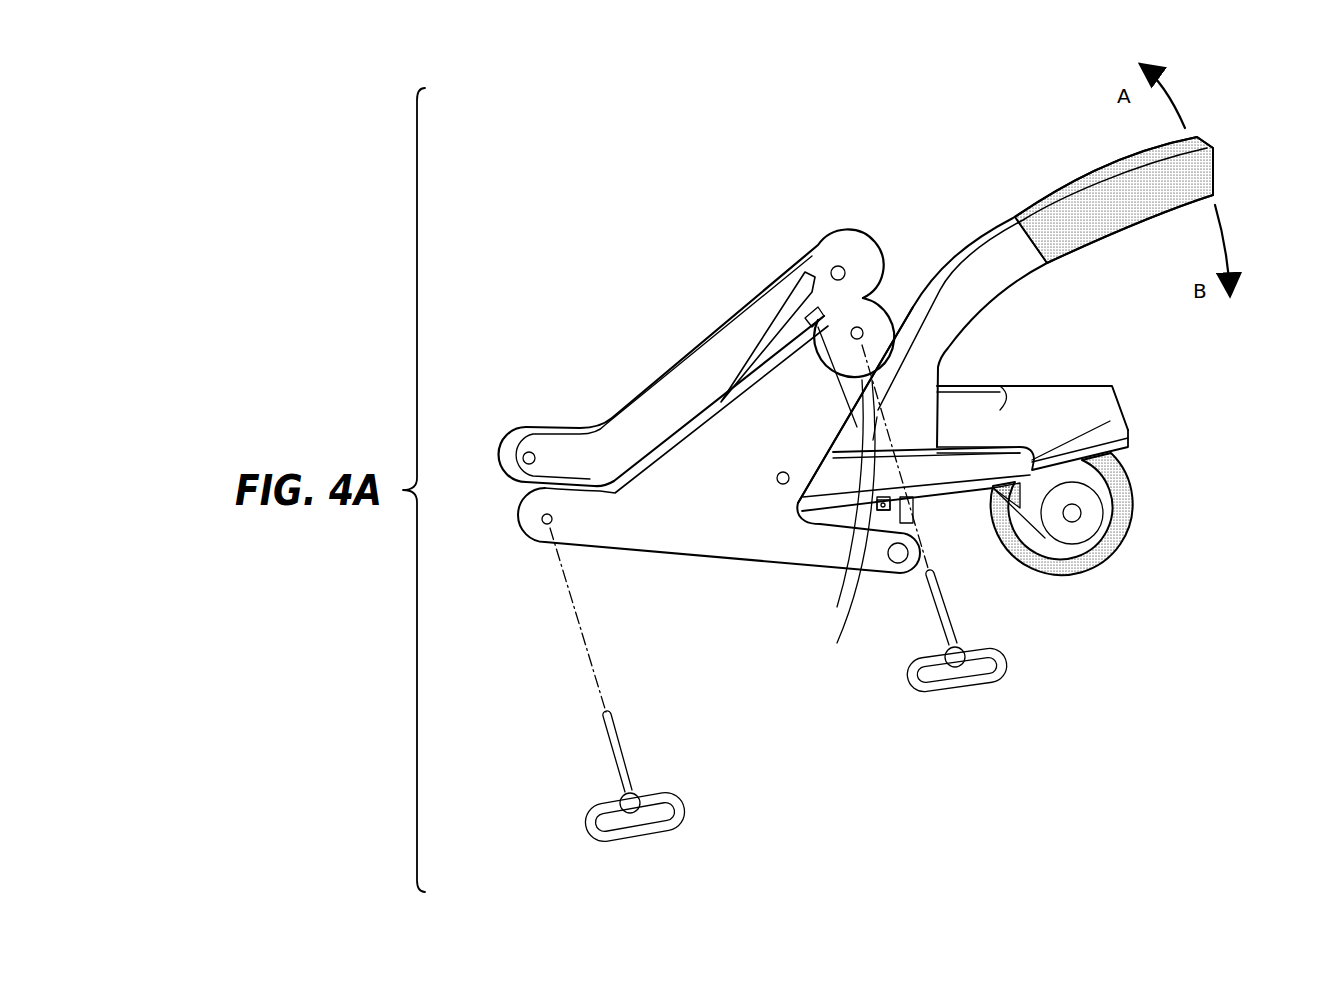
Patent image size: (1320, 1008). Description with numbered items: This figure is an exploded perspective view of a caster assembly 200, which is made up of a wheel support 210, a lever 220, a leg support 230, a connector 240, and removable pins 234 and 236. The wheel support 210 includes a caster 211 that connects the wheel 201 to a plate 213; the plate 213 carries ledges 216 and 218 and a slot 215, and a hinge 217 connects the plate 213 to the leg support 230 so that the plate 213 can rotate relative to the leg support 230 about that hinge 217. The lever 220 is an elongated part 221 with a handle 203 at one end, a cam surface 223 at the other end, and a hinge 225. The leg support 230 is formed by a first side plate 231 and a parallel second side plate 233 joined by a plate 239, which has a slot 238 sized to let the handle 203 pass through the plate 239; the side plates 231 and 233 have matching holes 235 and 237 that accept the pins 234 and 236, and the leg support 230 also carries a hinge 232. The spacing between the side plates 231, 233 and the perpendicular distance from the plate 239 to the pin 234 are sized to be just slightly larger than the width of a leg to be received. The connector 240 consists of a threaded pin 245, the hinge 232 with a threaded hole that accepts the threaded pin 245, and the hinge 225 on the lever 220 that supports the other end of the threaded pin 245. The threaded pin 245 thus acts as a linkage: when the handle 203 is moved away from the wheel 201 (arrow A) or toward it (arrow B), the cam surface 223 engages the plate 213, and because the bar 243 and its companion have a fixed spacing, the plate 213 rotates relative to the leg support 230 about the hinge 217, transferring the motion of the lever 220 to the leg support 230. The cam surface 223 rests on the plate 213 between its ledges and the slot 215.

The caster assembly 200 is at (707, 168).
The wheel 201 is at (1135, 515).
The handle 203 is at (1105, 236).
The wheel support 210 is at (1142, 352).
The caster 211 is at (1033, 577).
The plate 213 is at (1097, 420).
The slot 215 is at (947, 437).
The ledge 216 is at (925, 437).
The hinge 217 is at (782, 485).
The ledge 218 is at (1110, 421).
The lever 220 is at (934, 175).
The elongated part 221 is at (1000, 232).
The cam surface 223 is at (842, 600).
The hinge 225 is at (890, 440).
The leg support 230 is at (658, 295).
The first side plate 231 is at (675, 362).
The hinge 232 is at (920, 523).
The second side plate 233 is at (640, 555).
The removable pin 234 is at (660, 795).
The holes 235 is at (540, 512).
The removable pin 236 is at (977, 685).
The holes 237 is at (845, 270).
The slot 238 is at (810, 260).
The plate 239 is at (783, 310).
The connector 240 is at (1058, 380).
The bar 243 is at (842, 636).
The threaded pin 245 is at (887, 567).